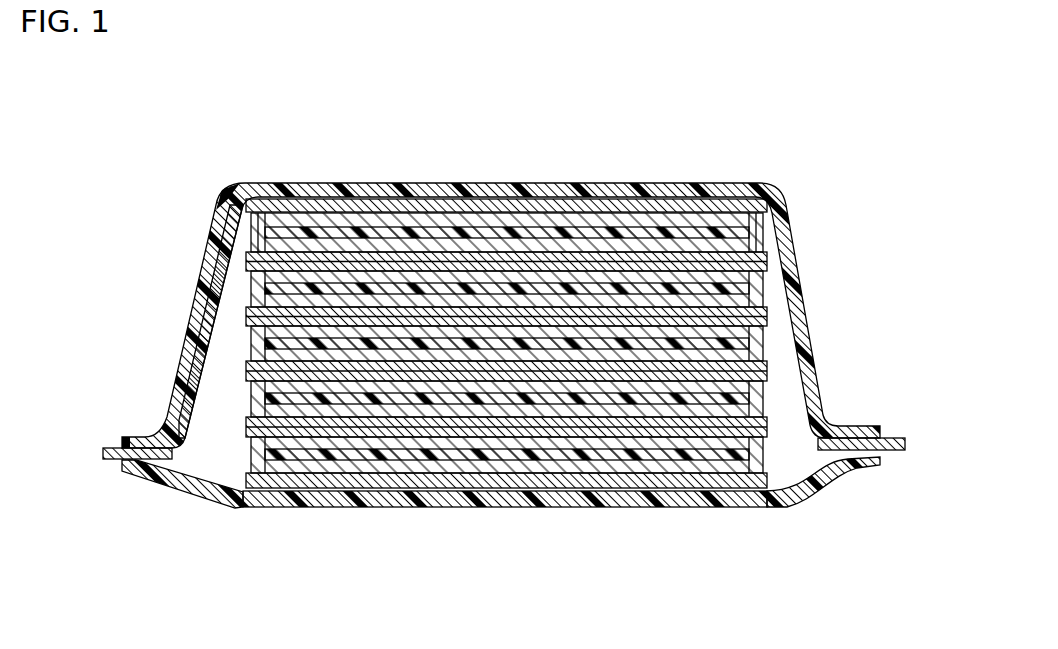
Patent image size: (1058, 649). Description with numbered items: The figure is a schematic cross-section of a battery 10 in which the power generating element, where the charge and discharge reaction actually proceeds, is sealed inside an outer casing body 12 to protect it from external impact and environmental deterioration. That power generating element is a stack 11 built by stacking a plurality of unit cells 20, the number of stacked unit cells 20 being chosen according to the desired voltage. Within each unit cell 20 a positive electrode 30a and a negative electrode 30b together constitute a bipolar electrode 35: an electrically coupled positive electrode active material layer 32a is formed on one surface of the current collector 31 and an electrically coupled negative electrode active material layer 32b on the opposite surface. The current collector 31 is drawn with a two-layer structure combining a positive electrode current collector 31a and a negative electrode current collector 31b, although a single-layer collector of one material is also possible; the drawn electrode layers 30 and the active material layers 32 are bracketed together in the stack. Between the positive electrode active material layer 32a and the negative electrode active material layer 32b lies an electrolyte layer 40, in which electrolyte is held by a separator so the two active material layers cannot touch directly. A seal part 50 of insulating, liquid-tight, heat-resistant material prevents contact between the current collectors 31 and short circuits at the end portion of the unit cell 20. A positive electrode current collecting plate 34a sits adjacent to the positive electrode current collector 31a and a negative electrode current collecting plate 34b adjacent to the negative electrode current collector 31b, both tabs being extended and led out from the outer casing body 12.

The battery 10 is at (172, 70).
The stack 11 is at (771, 345).
The outer casing body 12 is at (200, 305).
The unit cell 20 is at (307, 77).
The electrode laminate 30 is at (620, 112).
The positive electrode 30a is at (495, 148).
The negative electrode 30b is at (638, 148).
The positive electrode current collector 31a is at (410, 212).
The positive electrode active material layer 32a is at (473, 223).
The negative electrode active material layer 32b is at (550, 248).
The negative electrode current collector 31b is at (610, 257).
The current collector 31 is at (463, 548).
The active material layers 32 is at (607, 548).
The positive electrode current collecting plate 34a is at (118, 448).
The negative electrode current collecting plate 34b is at (885, 438).
The bipolar electrode 35 is at (605, 585).
The electrolyte layer 40 is at (685, 228).
The seal part 50 is at (266, 224).